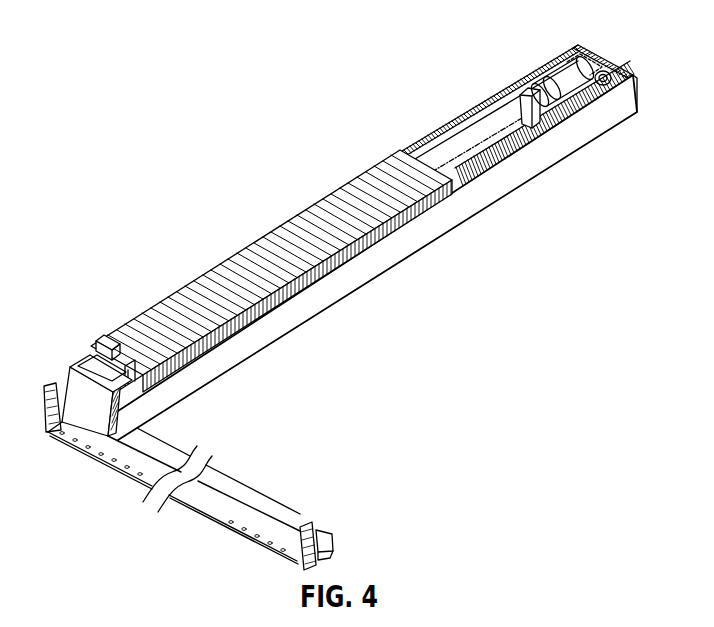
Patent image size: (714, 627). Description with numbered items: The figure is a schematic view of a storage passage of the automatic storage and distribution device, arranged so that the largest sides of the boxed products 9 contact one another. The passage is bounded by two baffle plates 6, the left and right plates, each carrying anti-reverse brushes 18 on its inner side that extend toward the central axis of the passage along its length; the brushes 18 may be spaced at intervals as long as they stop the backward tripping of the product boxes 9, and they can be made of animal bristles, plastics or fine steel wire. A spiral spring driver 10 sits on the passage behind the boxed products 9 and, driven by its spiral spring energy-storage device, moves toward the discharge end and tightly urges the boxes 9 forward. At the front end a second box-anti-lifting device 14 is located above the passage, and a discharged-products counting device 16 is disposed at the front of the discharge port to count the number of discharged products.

The baffle plates 6 is at (377, 265).
The boxed products 9 is at (252, 268).
The spiral spring driver 10 is at (557, 72).
The second box-anti-lifting device 14 is at (112, 363).
The discharged-products counting device 16 is at (310, 527).
The anti-reverse brushes 18 is at (460, 147).